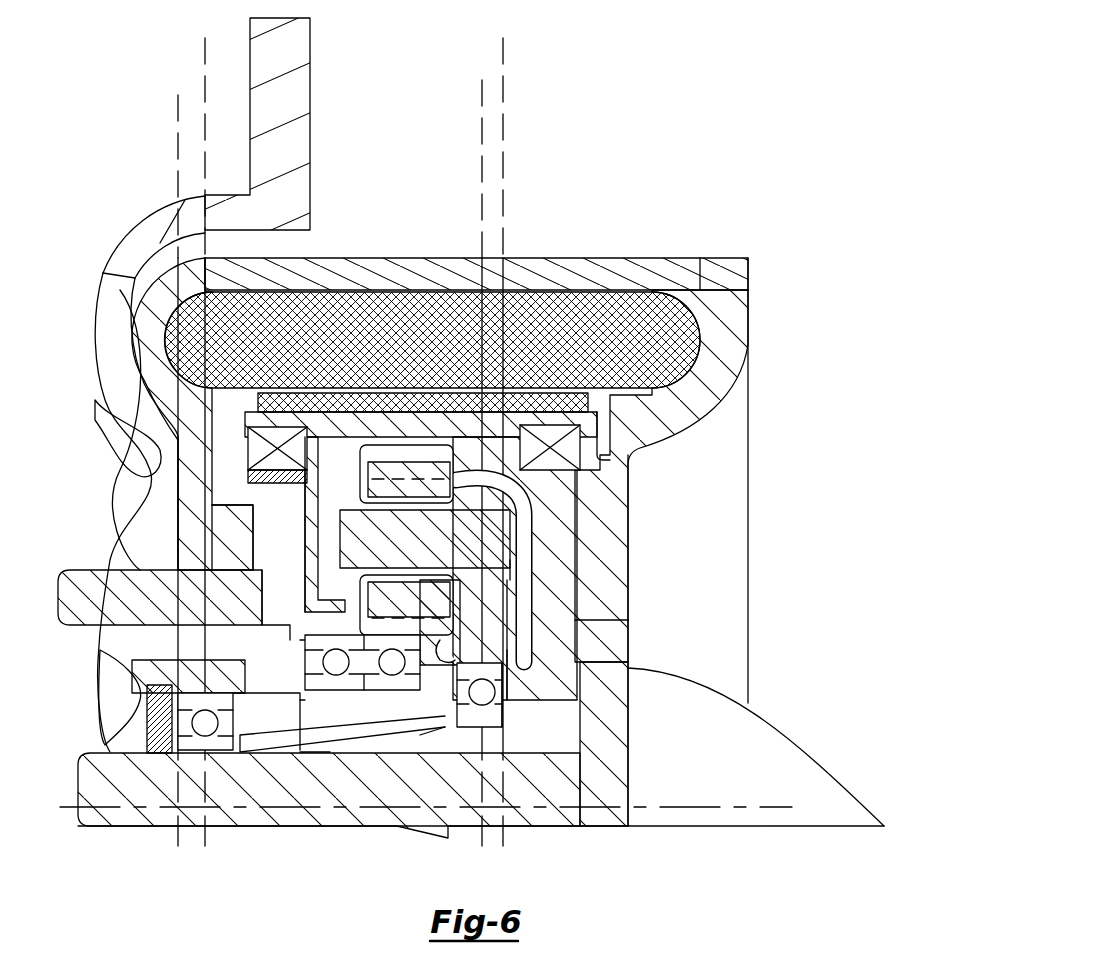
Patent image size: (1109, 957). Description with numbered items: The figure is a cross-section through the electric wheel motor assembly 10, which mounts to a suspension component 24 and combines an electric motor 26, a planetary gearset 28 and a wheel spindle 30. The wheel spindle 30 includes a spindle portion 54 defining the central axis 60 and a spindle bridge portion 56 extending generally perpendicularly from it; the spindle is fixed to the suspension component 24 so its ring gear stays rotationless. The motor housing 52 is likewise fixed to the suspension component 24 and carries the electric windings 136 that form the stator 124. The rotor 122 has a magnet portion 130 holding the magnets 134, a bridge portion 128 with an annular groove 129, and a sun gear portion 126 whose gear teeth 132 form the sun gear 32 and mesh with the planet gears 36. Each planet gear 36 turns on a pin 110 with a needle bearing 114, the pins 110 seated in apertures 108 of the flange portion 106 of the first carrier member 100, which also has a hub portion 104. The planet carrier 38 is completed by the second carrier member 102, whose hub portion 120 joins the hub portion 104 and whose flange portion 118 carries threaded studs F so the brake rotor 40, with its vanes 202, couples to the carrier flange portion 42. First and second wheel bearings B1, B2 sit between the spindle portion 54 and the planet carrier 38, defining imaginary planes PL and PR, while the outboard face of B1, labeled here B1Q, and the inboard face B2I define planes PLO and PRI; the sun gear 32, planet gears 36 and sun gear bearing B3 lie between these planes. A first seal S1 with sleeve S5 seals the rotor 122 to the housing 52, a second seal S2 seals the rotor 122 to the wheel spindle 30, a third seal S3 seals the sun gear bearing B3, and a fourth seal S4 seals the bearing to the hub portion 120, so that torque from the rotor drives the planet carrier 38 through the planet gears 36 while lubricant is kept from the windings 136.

The electric wheel motor assembly 10 is at (578, 138).
The suspension component 24 is at (752, 700).
The electric motor 26 is at (612, 397).
The planetary gearset 28 is at (272, 562).
The wheel spindle 30 is at (570, 783).
The sun gear 32 is at (308, 656).
The planet gears 36 is at (396, 490).
The planet carrier 38 is at (505, 656).
The brake rotor 40 is at (310, 75).
The flange portion 42 is at (208, 640).
The housing 52 is at (613, 258).
The spindle portion 54 is at (388, 796).
The spindle bridge portion 56 is at (598, 555).
The central axis 60 is at (733, 800).
The first carrier member 100 is at (437, 675).
The second carrier member 102 is at (240, 542).
The hub portion 104 is at (320, 760).
The flange portion 106 is at (495, 622).
The apertures 108 is at (545, 497).
The pin 110 is at (442, 549).
The needle bearing 114 is at (470, 492).
The flange portion 118 is at (217, 553).
The hub portion 120 is at (262, 732).
The rotor 122 is at (318, 510).
The stator 124 is at (680, 323).
The sun gear portion 126 is at (440, 622).
The bridge portion 128 is at (330, 560).
The annular groove 129 is at (318, 500).
The magnet portion 130 is at (416, 424).
The gear teeth 132 is at (495, 588).
The magnets 134 is at (372, 400).
The electric windings 136 is at (368, 304).
The vanes 202 is at (103, 446).
The first wheel bearing B1 is at (213, 746).
The first bearing seat B1Q is at (216, 695).
The second wheel bearing B2 is at (466, 728).
The inboard face B2I is at (500, 728).
The sun gear bearing B3 is at (365, 690).
The first seal S1 is at (268, 455).
The second seal S2 is at (560, 447).
The third seal S3 is at (285, 628).
The fourth seal S4 is at (150, 730).
The sleeve S5 is at (250, 476).
The threaded studs F is at (154, 611).
The first imaginary plane PL is at (205, 50).
The third imaginary plane PLO is at (180, 145).
The second imaginary plane PR is at (482, 152).
The fourth imaginary plane PRI is at (510, 54).